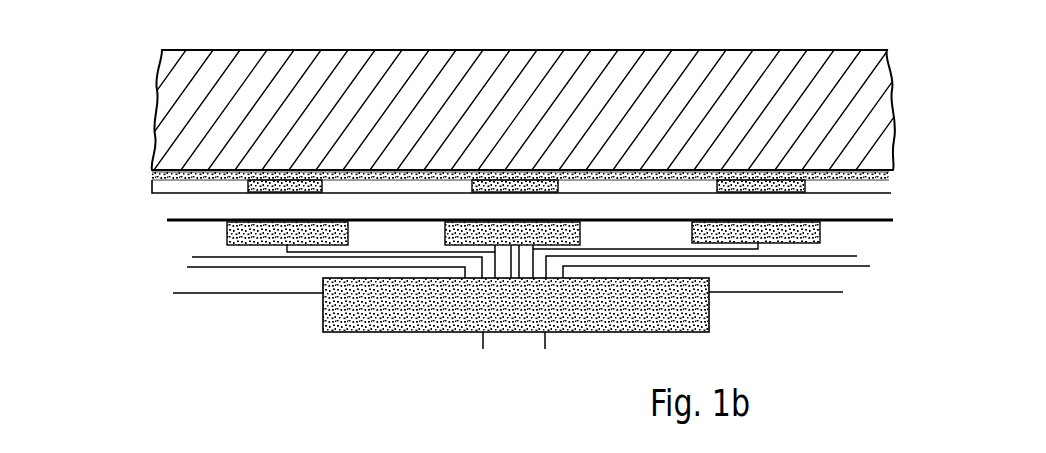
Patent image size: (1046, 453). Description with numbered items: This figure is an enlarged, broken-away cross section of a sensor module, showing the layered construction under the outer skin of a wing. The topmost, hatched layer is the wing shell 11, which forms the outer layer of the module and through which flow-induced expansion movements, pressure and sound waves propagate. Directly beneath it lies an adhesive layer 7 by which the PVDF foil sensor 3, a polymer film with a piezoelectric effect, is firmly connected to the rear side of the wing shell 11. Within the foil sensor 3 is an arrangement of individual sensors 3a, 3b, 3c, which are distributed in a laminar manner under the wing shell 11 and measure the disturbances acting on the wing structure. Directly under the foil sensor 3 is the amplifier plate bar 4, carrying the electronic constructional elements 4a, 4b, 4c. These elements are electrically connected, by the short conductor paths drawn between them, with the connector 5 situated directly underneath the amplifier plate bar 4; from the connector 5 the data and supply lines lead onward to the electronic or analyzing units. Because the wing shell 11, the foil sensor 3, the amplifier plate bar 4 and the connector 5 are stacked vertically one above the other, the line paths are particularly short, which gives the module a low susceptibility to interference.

The wing shell 11 is at (193, 62).
The adhesive layer 7 is at (487, 146).
The PVDF foil sensor 3 is at (160, 187).
The sensor 3a is at (310, 193).
The sensor 3b is at (538, 193).
The sensor 3c is at (788, 193).
The amplifier plate bar 4 is at (150, 259).
The electronic constructional element 4a is at (262, 245).
The electronic constructional element 4b is at (580, 234).
The electronic constructional element 4c is at (820, 232).
The connector 5 is at (709, 313).